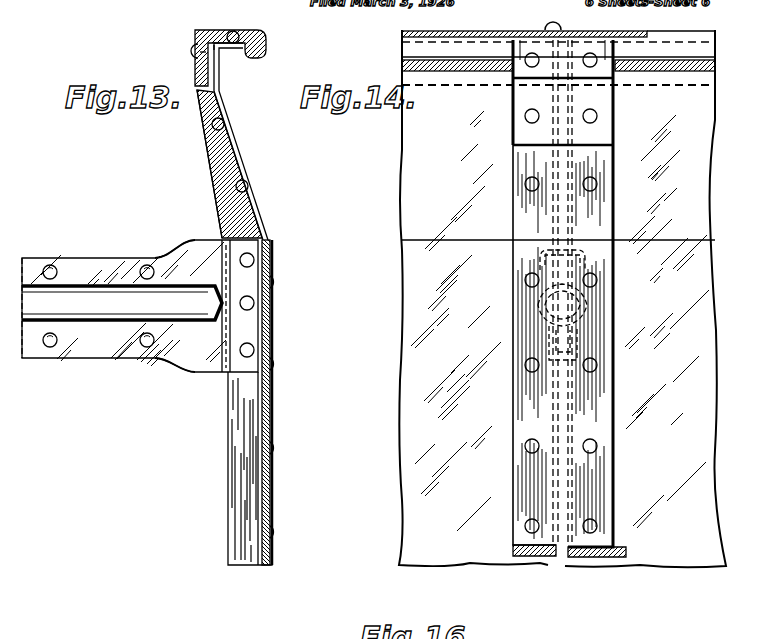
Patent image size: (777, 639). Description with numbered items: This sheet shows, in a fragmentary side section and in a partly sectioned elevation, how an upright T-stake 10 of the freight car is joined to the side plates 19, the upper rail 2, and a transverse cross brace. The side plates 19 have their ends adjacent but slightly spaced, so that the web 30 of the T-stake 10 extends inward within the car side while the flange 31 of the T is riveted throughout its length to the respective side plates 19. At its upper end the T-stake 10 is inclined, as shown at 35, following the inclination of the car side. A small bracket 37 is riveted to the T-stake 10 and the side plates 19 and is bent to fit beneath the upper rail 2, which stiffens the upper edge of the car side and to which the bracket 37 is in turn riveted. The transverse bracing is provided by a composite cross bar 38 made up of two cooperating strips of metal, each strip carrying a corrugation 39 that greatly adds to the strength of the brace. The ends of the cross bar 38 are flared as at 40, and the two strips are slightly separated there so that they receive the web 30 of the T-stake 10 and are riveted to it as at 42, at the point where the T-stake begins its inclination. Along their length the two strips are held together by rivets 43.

In FIG. 13, the upper rail 2 is at (260, 32).
In FIG. 14, the upper rail 2 is at (424, 36).
In FIG. 13, the T-stake 10 is at (270, 481).
In FIG. 14, the T-stake 10 is at (553, 404).
In FIG. 13, the side plate 19 is at (268, 412).
In FIG. 14, the side plate 19 is at (700, 420).
In FIG. 13, the web 30 is at (238, 487).
In FIG. 14, the web 30 is at (563, 472).
In FIG. 14, the flange 31 is at (598, 376).
In FIG. 13, the inclined upper end 35 is at (246, 173).
In FIG. 13, the bracket 37 is at (212, 78).
In FIG. 14, the bracket 37 is at (590, 97).
In FIG. 13, the composite cross bar 38 is at (102, 263).
In FIG. 14, the composite cross bar 38 is at (547, 333).
In FIG. 13, the corrugation 39 is at (75, 312).
In FIG. 14, the corrugation 39 is at (538, 302).
In FIG. 13, the flared end 40 is at (180, 250).
In FIG. 13, the rivets 42 is at (258, 346).
In FIG. 14, the rivets 42 is at (545, 258).
In FIG. 13, the rivets 43 is at (50, 264).